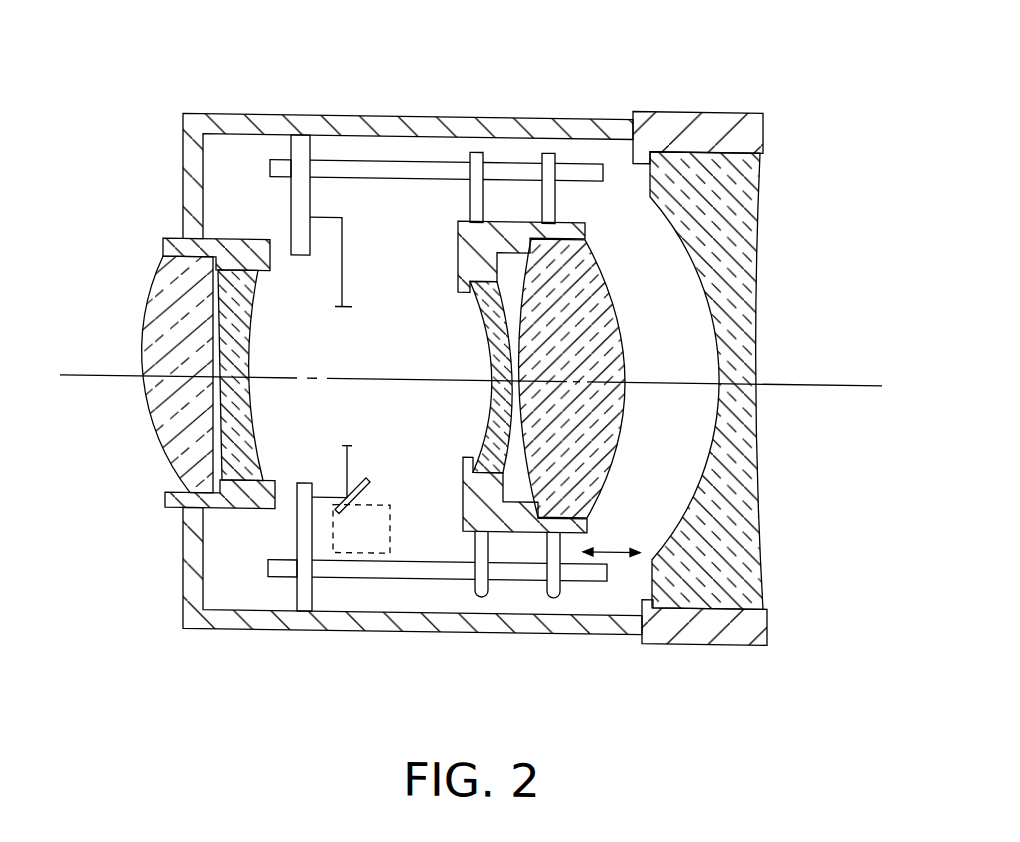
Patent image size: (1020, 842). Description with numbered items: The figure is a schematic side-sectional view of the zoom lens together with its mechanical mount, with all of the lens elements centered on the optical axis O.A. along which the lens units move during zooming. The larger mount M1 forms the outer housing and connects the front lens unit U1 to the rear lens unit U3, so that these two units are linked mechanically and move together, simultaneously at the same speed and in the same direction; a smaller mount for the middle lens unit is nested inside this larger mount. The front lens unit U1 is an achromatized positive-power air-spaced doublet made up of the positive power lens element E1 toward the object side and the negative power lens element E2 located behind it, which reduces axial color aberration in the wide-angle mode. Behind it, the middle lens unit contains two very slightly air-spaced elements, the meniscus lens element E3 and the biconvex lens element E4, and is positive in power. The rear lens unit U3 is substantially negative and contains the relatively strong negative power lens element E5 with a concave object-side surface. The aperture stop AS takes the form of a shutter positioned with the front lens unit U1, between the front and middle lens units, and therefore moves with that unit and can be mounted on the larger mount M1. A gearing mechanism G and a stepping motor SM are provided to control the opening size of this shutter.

The larger mount M1 is at (243, 116).
The front lens unit U1 is at (143, 230).
The rear lens unit U3 is at (760, 91).
The positive power lens element E1 is at (172, 449).
The negative power lens element E2 is at (241, 454).
The meniscus lens element E3 is at (473, 440).
The biconvex lens element E4 is at (591, 476).
The negative power lens element E5 is at (744, 500).
The aperture stop AS is at (349, 442).
The gearing mechanism G is at (352, 503).
The stepping motor SM is at (370, 554).
The optical axis O.A. is at (812, 377).